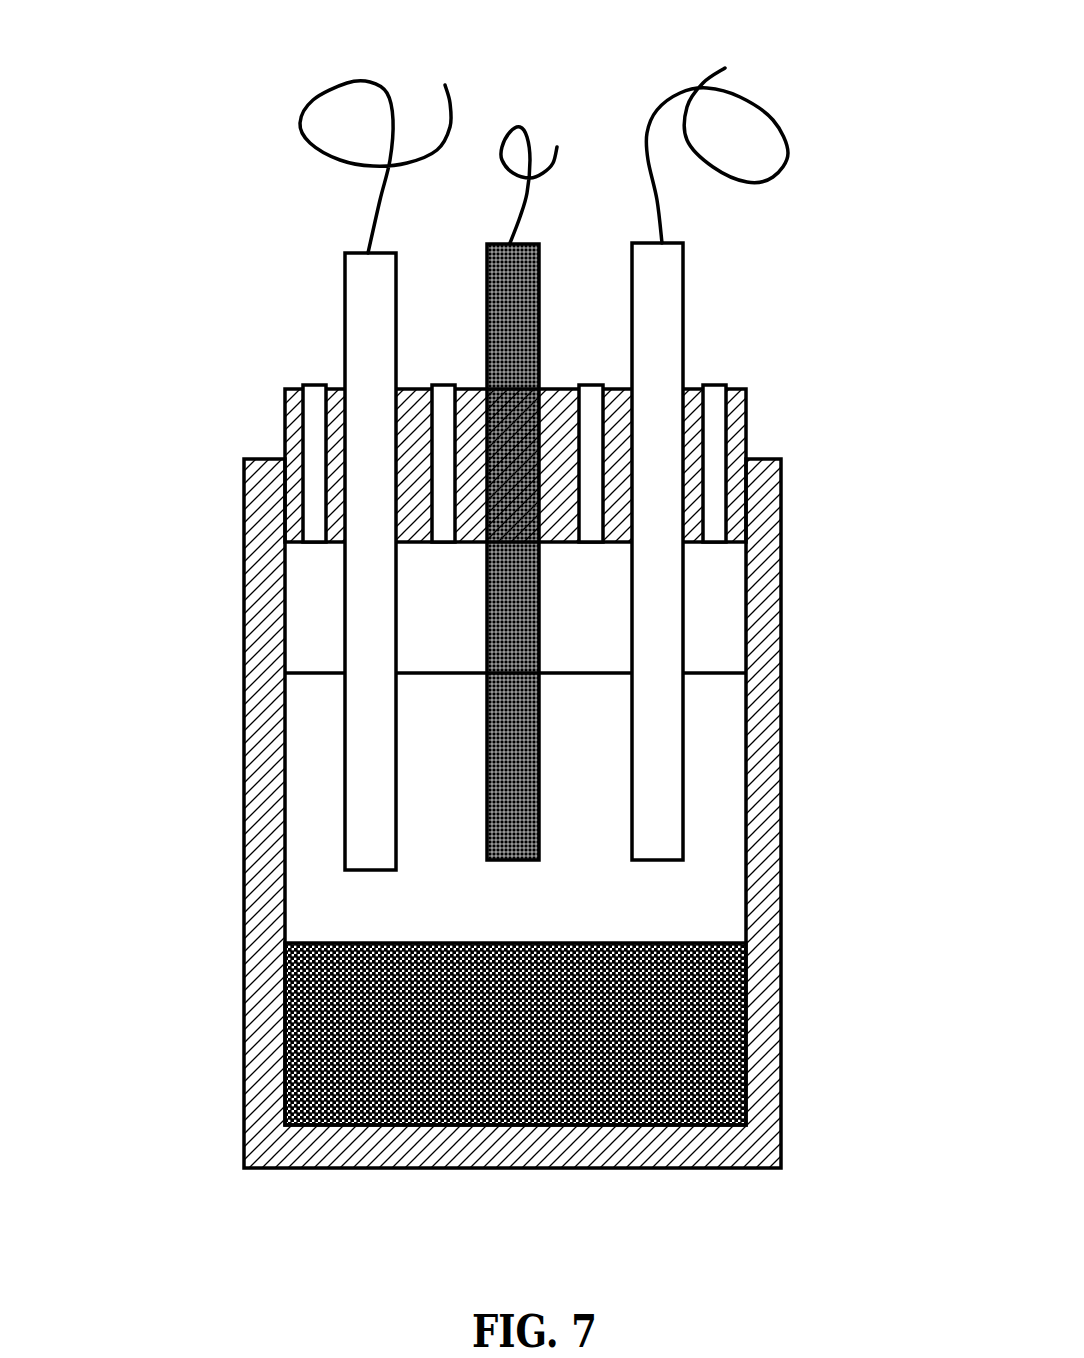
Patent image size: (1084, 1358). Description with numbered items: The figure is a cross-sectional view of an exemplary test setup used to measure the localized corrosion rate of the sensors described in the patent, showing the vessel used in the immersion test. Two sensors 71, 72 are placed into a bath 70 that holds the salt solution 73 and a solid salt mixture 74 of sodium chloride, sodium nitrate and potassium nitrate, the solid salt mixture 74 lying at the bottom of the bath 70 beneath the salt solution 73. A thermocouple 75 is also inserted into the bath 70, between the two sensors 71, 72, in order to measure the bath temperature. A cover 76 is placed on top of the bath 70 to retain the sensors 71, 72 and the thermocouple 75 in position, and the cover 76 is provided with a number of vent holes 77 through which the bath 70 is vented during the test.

The bath 70 is at (241, 747).
The sensor 71 is at (697, 285).
The sensor 72 is at (337, 326).
The salt solution 73 is at (715, 837).
The solid salt mixture 74 is at (668, 1012).
The thermocouple 75 is at (542, 303).
The cover 76 is at (748, 427).
The vent holes 77 is at (713, 400).